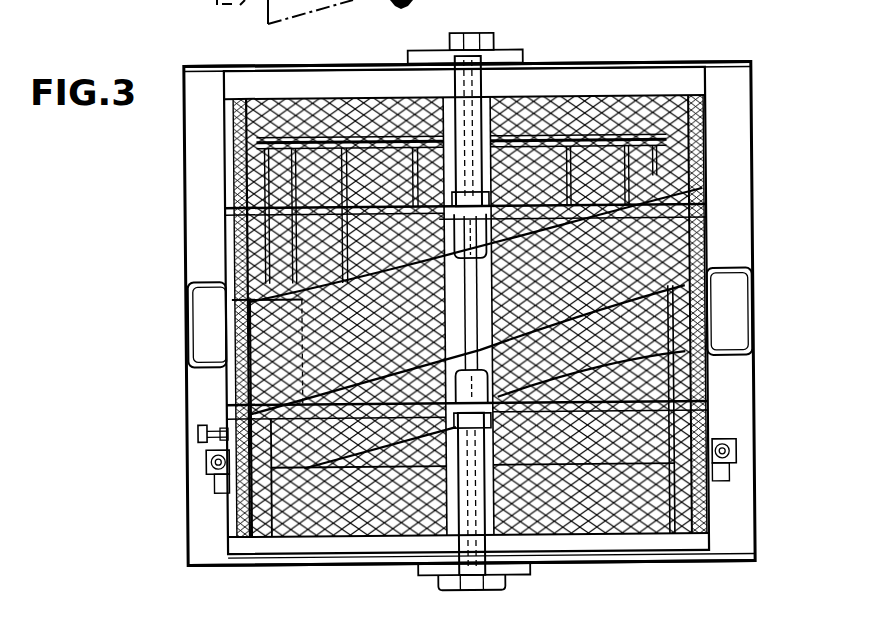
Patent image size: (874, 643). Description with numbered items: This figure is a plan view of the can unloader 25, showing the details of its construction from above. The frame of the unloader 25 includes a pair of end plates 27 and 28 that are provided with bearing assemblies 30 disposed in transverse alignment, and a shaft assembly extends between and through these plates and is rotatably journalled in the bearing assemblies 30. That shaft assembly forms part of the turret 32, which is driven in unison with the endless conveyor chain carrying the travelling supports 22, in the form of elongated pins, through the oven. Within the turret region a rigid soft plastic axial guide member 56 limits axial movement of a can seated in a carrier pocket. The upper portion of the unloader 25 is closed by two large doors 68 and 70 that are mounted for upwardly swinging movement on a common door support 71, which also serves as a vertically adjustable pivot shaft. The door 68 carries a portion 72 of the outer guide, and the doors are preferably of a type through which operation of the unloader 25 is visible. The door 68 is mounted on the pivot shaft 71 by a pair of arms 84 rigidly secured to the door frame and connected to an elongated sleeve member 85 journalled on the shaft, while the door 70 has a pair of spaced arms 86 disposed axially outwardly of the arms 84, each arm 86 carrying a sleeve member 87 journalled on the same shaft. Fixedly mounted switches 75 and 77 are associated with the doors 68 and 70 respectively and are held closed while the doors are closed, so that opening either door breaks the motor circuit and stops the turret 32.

The travelling support 22 is at (413, 230).
The unloader 25 is at (758, 165).
The end plate 27 is at (280, 568).
The end plate 28 is at (679, 64).
The bearing assembly 30 is at (526, 50).
The turret 32 is at (584, 128).
The axial guide member 56 is at (317, 465).
The door 68 is at (712, 108).
The door 70 is at (230, 160).
The door support 71 is at (456, 316).
The outer guide portion 72 is at (688, 194).
The switch 75 is at (729, 477).
The switch 77 is at (213, 478).
The arm 84 is at (553, 222).
The sleeve member 85 is at (498, 382).
The arm 86 is at (405, 207).
The sleeve member 87 is at (458, 105).